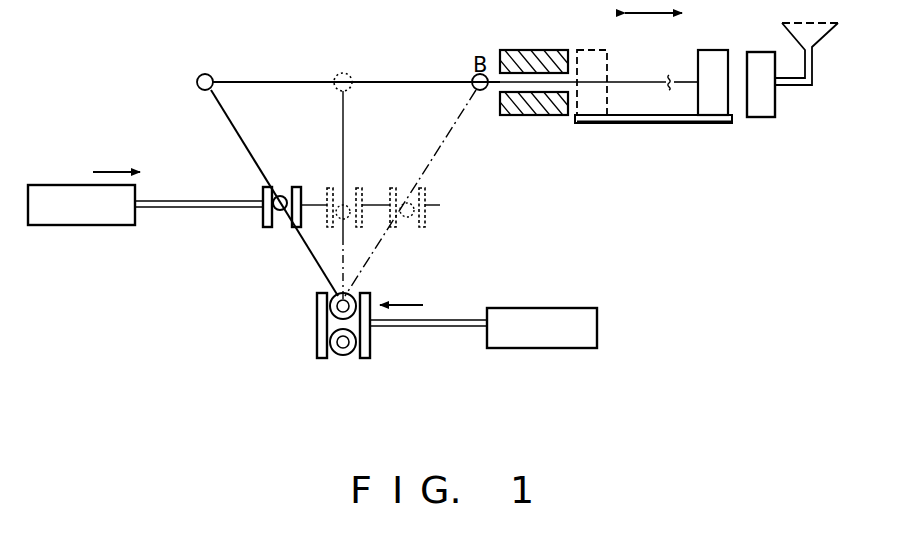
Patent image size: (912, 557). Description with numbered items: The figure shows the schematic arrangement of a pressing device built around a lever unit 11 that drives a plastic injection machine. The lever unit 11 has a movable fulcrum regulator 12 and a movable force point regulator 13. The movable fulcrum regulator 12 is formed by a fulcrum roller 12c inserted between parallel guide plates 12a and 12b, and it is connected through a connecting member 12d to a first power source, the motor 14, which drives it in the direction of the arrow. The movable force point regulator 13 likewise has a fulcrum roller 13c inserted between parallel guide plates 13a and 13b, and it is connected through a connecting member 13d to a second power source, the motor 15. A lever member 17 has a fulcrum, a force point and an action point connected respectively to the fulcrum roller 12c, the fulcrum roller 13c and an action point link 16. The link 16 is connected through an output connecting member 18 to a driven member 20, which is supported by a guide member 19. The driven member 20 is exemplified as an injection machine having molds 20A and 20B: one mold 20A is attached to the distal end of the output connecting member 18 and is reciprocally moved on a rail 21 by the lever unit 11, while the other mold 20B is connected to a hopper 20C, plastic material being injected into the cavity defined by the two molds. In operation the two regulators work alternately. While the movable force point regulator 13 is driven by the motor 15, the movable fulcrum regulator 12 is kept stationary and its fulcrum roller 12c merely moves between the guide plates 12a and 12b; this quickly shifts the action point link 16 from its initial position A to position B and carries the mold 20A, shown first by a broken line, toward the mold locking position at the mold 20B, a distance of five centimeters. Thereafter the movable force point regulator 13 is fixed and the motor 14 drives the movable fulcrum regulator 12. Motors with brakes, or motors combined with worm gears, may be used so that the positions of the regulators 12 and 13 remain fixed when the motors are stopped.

The lever unit 11 is at (524, 254).
The movable fulcrum regulator 12 is at (381, 332).
The guide plate 12a is at (319, 359).
The guide plate 12b is at (367, 359).
The fulcrum roller 12c is at (346, 294).
The connecting member 12d is at (441, 328).
The movable force point regulator 13 is at (287, 211).
The guide plate 13a is at (266, 228).
The guide plate 13b is at (296, 187).
The fulcrum roller 13c is at (263, 197).
The connecting member 13d is at (187, 208).
The motor 14 is at (572, 315).
The motor 15 is at (55, 185).
The action point link 16 is at (196, 81).
The lever member 17 is at (232, 133).
The output connecting member 18 is at (272, 80).
The guide member 19 is at (532, 50).
The driven member 20 is at (722, 101).
The mold 20A is at (593, 107).
The mold 20B is at (775, 105).
The hopper 20C is at (827, 40).
The rail 21 is at (660, 124).